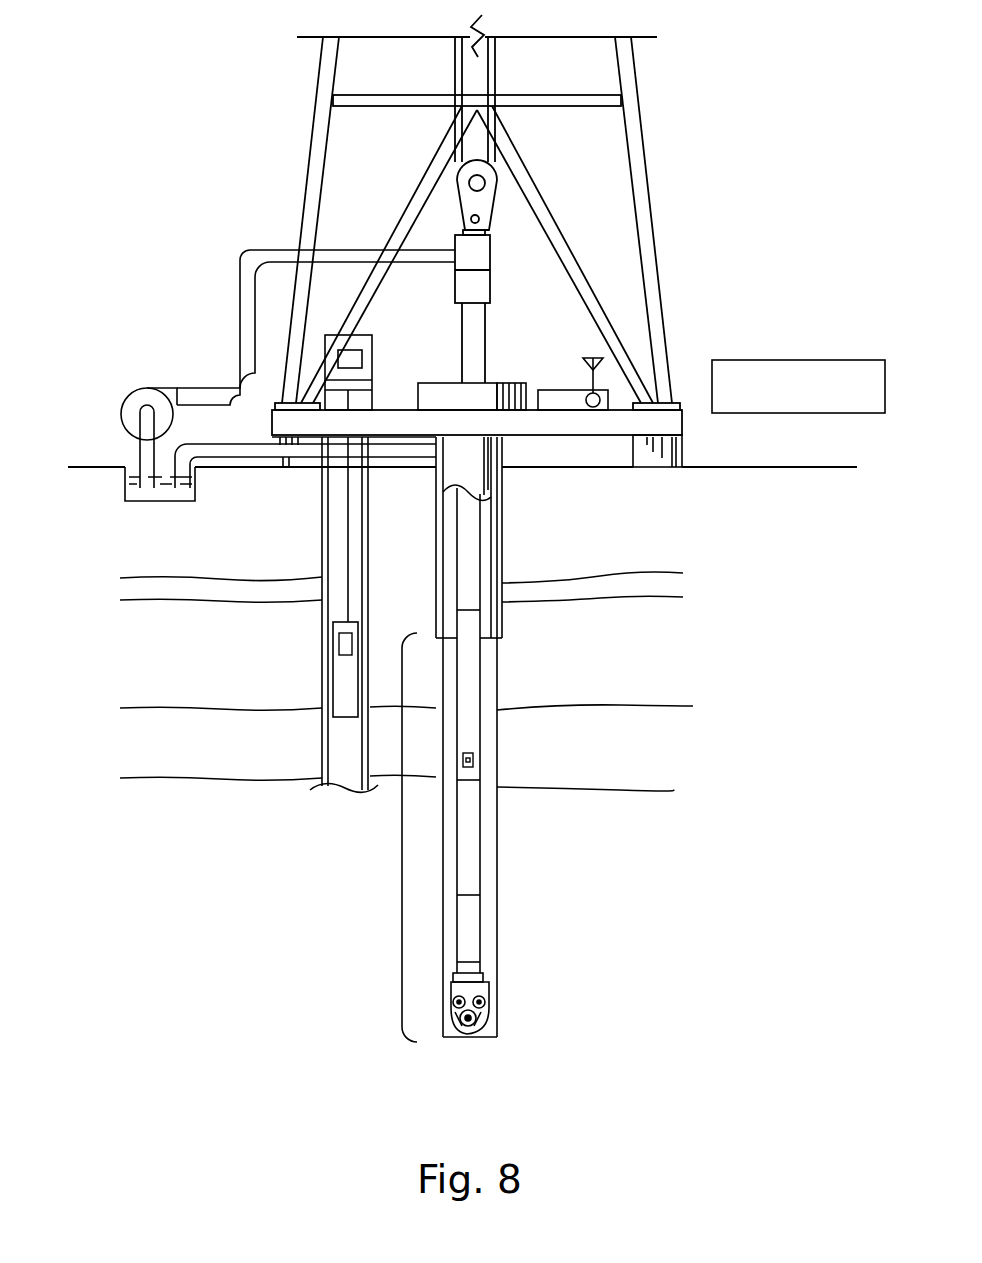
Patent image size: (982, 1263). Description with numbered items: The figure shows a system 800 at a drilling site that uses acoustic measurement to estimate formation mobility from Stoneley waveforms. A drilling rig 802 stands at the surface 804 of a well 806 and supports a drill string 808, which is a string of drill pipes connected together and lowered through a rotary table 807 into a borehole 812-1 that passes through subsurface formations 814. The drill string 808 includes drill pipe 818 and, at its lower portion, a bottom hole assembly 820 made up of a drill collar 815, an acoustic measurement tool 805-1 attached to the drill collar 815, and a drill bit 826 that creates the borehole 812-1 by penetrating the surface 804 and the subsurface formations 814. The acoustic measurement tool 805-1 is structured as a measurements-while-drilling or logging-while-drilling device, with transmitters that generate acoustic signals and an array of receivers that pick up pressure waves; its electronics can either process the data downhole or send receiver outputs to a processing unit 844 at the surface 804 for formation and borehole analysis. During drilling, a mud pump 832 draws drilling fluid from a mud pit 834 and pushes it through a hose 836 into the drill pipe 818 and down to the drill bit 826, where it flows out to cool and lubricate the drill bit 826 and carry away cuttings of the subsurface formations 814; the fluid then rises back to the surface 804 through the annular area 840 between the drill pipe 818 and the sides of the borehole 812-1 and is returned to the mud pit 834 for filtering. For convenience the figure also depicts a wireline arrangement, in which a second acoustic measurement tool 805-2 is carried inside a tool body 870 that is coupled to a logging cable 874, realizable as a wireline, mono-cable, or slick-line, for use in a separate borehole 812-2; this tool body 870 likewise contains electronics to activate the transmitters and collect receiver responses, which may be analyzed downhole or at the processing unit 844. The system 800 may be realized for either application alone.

The system 800 is at (218, 70).
The drilling rig 802 is at (639, 113).
The surface 804 is at (700, 467).
The well 806 is at (515, 465).
The rotary table 807 is at (448, 383).
The drill string 808 is at (486, 522).
The borehole 812-1 is at (492, 582).
The borehole 812-2 is at (322, 567).
The subsurface formations 814 is at (122, 545).
The drill collar 815 is at (480, 740).
The drill pipe 818 is at (480, 650).
The bottom hole assembly 820 is at (402, 846).
The drill bit 826 is at (490, 998).
The mud pump 832 is at (153, 388).
The mud pit 834 is at (132, 467).
The hose 836 is at (240, 330).
The annular area 840 is at (487, 688).
The processing unit 844 is at (797, 360).
The tool body 870 is at (333, 680).
The logging cable 874 is at (323, 522).
The acoustic measurement tool 805-1 is at (473, 760).
The acoustic measurement tool 805-2 is at (340, 637).